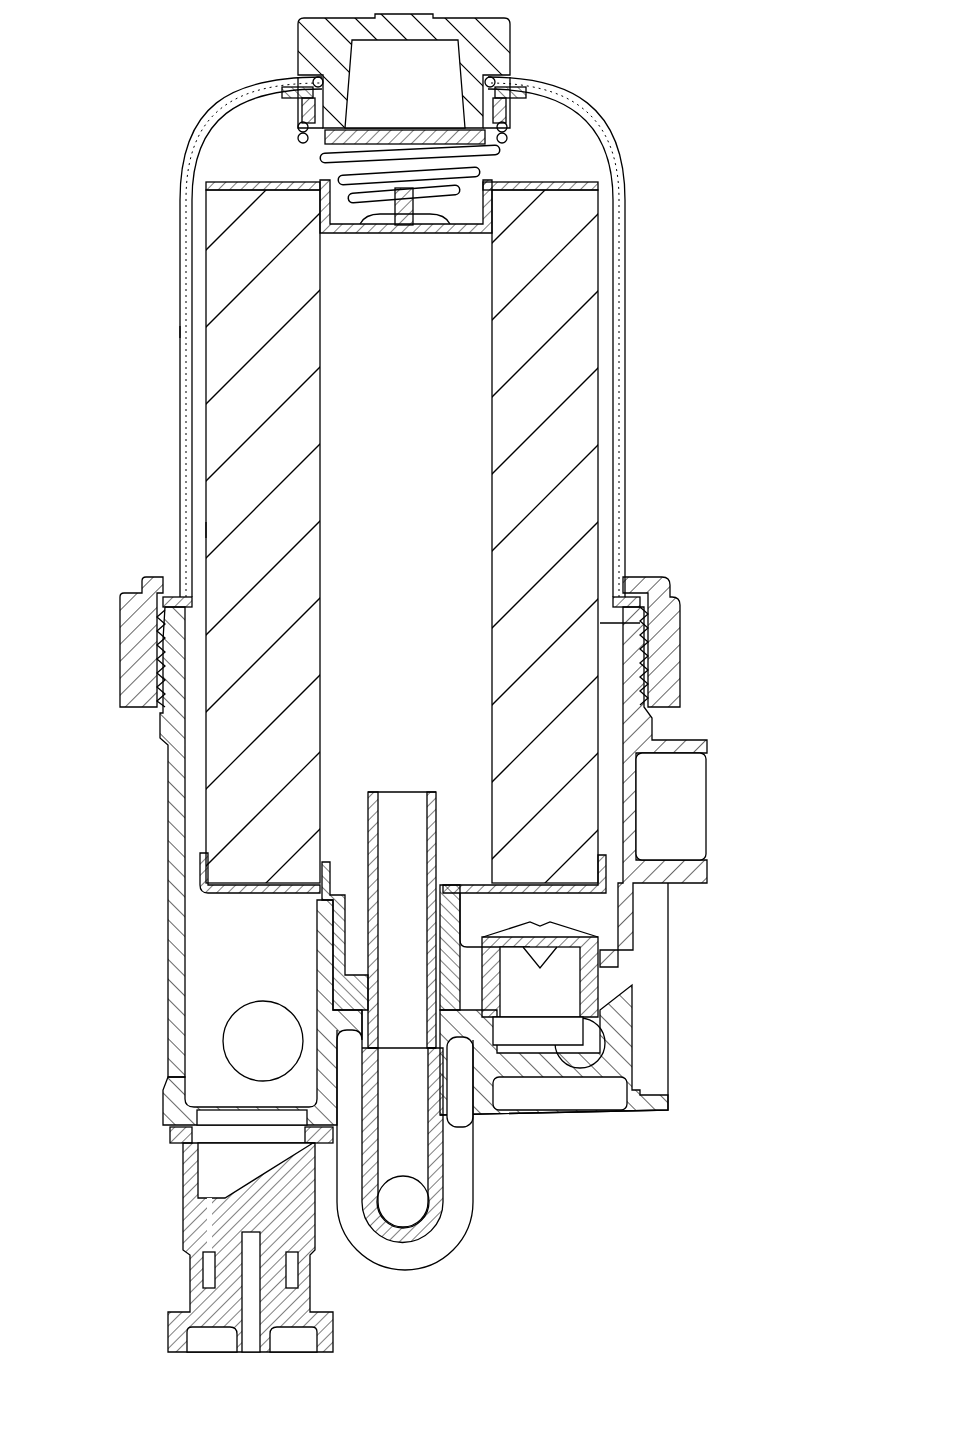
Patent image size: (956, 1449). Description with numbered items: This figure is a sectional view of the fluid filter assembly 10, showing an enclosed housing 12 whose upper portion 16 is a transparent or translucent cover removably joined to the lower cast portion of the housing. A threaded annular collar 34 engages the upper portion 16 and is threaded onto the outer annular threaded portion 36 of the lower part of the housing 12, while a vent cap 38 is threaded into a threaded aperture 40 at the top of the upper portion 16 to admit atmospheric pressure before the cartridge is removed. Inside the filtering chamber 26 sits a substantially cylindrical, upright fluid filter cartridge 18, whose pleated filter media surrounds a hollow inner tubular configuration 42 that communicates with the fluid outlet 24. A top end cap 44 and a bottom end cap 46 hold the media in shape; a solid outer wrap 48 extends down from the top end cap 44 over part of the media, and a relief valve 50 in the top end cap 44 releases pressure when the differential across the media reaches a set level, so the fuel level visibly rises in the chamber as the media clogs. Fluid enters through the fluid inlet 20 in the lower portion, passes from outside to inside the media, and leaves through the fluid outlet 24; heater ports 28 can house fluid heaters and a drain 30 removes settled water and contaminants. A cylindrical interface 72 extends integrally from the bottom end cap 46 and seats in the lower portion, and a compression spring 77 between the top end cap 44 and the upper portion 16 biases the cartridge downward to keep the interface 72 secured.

The fluid filter assembly 10 is at (787, 161).
The housing 12 is at (630, 261).
The upper portion 16 is at (180, 332).
The fluid filter cartridge 18 is at (207, 468).
The fluid inlet 20 is at (572, 1055).
The fluid outlet 24 is at (206, 217).
The filtering chamber 26 is at (607, 470).
The heater ports 28 is at (230, 1037).
The drain 30 is at (167, 1340).
The threaded annular collar 34 is at (680, 637).
The outer annular threaded portion 36 is at (160, 713).
The vent cap 38 is at (506, 47).
The threaded aperture 40 is at (500, 84).
The inner tubular configuration 42 is at (327, 806).
The top end cap 44 is at (224, 180).
The bottom end cap 46 is at (607, 890).
The outer wrap 48 is at (207, 530).
The relief valve 50 is at (405, 232).
The interface 72 is at (332, 928).
The compression spring 77 is at (307, 143).